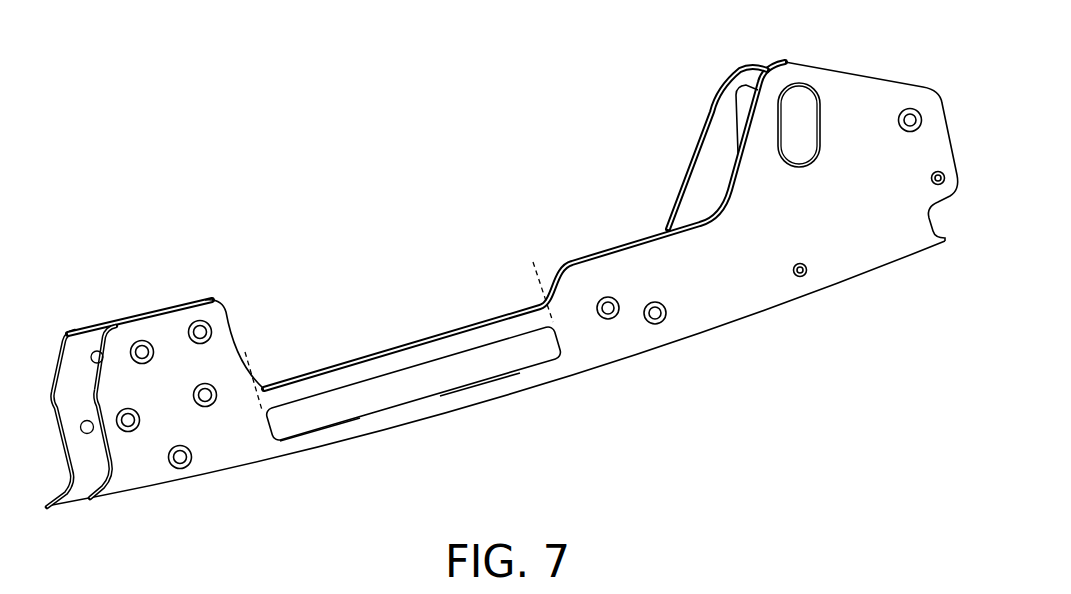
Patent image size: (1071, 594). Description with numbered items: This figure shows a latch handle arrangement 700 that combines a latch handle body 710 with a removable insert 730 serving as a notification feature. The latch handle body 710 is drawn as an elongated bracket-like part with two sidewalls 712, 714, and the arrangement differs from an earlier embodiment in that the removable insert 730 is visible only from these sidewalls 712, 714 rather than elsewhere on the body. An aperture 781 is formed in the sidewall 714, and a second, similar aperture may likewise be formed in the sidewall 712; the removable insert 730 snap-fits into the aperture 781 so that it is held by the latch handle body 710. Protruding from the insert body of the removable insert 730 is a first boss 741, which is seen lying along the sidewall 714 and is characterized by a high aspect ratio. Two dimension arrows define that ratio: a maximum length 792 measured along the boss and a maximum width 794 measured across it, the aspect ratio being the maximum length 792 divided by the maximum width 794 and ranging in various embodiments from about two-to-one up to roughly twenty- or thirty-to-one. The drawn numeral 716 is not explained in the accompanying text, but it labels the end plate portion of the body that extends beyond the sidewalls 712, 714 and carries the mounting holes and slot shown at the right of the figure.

The latch handle arrangement 700 is at (335, 101).
The latch handle body 710 is at (242, 453).
The sidewall 712 is at (84, 333).
The sidewall 714 is at (197, 300).
The end plate 716 is at (615, 365).
The removable insert 730 is at (357, 405).
The first boss 741 is at (310, 415).
The aperture 781 is at (477, 385).
The maximum length 792 is at (535, 273).
The maximum width 794 is at (502, 293).